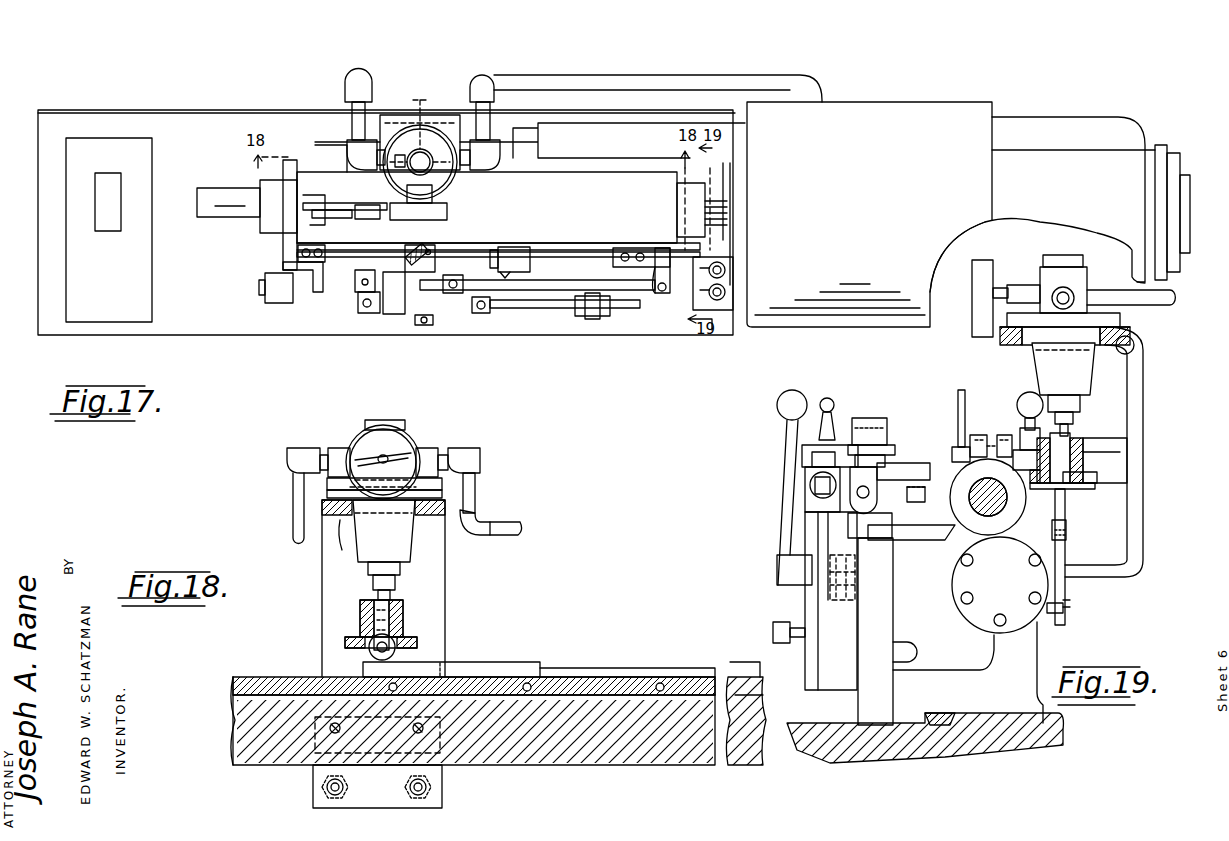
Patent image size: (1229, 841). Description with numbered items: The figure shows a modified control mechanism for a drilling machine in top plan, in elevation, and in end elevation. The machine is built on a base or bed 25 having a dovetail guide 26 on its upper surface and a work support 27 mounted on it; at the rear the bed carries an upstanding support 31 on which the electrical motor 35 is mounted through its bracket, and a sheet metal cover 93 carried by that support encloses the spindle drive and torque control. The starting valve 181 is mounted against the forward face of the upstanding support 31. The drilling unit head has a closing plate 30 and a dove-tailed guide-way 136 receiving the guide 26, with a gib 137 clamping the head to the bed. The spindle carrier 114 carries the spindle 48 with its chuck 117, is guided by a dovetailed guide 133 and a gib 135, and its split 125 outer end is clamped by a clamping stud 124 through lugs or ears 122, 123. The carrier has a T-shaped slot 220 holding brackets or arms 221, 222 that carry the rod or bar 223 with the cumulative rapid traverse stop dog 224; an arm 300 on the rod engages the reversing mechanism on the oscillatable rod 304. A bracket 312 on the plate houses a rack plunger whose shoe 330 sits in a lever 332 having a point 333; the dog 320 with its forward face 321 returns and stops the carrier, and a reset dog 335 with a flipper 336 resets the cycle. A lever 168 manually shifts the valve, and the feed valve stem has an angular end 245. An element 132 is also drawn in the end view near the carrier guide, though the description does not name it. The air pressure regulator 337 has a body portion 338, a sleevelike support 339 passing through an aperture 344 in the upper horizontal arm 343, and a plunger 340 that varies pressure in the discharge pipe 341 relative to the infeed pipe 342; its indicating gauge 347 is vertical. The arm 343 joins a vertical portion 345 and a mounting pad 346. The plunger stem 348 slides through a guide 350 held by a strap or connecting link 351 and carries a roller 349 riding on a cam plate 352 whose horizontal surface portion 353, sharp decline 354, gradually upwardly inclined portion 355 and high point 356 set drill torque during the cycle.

In FIG. 17, the base or bed 25 is at (218, 322).
In FIG. 19, the base or bed 25 is at (968, 745).
In FIG. 19, the dovetail guide 26 is at (1008, 718).
In FIG. 17, the work support 27 is at (96, 312).
In FIG. 19, the closing plate 30 is at (880, 693).
In FIG. 17, the upstanding support 31 is at (740, 234).
In FIG. 17, the electrical motor 35 is at (1078, 130).
In FIG. 17, the spindle 48 is at (720, 200).
In FIG. 17, the sheet metal cover 93 is at (965, 115).
In FIG. 17, the spindle carrier 114 is at (625, 193).
In FIG. 17, the chuck 117 is at (238, 180).
In FIG. 17, the lug or ear 122 is at (327, 202).
In FIG. 17, the lug or ear 123 is at (328, 218).
In FIG. 17, the clamping stud 124 is at (283, 220).
In FIG. 17, the split 125 is at (372, 215).
In FIG. 19, the disc 132 is at (1015, 625).
In FIG. 19, the dovetailed guide 133 is at (1012, 535).
In FIG. 19, the gib 135 is at (928, 540).
In FIG. 19, the dove-tailed guide-way 136 is at (1046, 718).
In FIG. 19, the gib 137 is at (940, 742).
In FIG. 17, the lever 168 is at (425, 328).
In FIG. 19, the lever 168 is at (787, 470).
In FIG. 17, the starting valve 181 is at (745, 308).
In FIG. 17, the T-shaped slot 220 is at (590, 250).
In FIG. 19, the T-shaped slot 220 is at (868, 480).
In FIG. 17, the bracket or arm 221 is at (655, 252).
In FIG. 19, the bracket or arm 221 is at (920, 478).
In FIG. 17, the bracket or arm 222 is at (303, 286).
In FIG. 17, the rod or bar 223 is at (640, 298).
In FIG. 17, the cumulative rapid traverse stop dog 224 is at (455, 295).
In FIG. 19, the end of angular cross-section 245 is at (782, 642).
In FIG. 17, the arm 300 is at (280, 305).
In FIG. 19, the oscillatable rod 304 is at (818, 490).
In FIG. 19, the bracket 312 is at (820, 549).
In FIG. 17, the dog 320 is at (525, 247).
In FIG. 17, the forward face 321 is at (500, 250).
In FIG. 19, the shoe 330 is at (866, 432).
In FIG. 17, the lever 332 is at (390, 312).
In FIG. 19, the lever 332 is at (842, 430).
In FIG. 19, the point 333 is at (868, 445).
In FIG. 17, the reset dog 335 is at (400, 243).
In FIG. 17, the flipper 336 is at (450, 250).
In FIG. 17, the air pressure regulator 337 is at (459, 73).
In FIG. 18, the air pressure regulator 337 is at (476, 392).
In FIG. 19, the air pressure regulator 337 is at (1054, 243).
In FIG. 18, the body portion 338 is at (478, 486).
In FIG. 19, the body portion 338 is at (1118, 320).
In FIG. 18, the sleevelike support 339 is at (402, 546).
In FIG. 19, the sleevelike support 339 is at (1040, 375).
In FIG. 18, the plunger 340 is at (398, 580).
In FIG. 19, the plunger 340 is at (1065, 402).
In FIG. 17, the discharge pipe 341 is at (658, 84).
In FIG. 18, the discharge pipe 341 is at (508, 520).
In FIG. 19, the discharge pipe 341 is at (1172, 298).
In FIG. 17, the infeed pipe 342 is at (352, 86).
In FIG. 18, the infeed pipe 342 is at (295, 527).
In FIG. 18, the upper horizontal arm 343 is at (323, 540).
In FIG. 19, the upper horizontal arm 343 is at (1137, 343).
In FIG. 18, the aperture 344 is at (342, 548).
In FIG. 19, the aperture 344 is at (1018, 340).
In FIG. 18, the vertical portion 345 is at (437, 613).
In FIG. 19, the vertical portion 345 is at (1145, 416).
In FIG. 19, the mounting pad 346 is at (1068, 590).
In FIG. 17, the indicating gauge 347 is at (440, 180).
In FIG. 18, the indicating gauge 347 is at (400, 445).
In FIG. 19, the indicating gauge 347 is at (980, 322).
In FIG. 18, the stem 348 is at (403, 613).
In FIG. 19, the stem 348 is at (1068, 488).
In FIG. 18, the roller 349 is at (392, 655).
In FIG. 19, the roller 349 is at (1067, 503).
In FIG. 18, the guide 350 is at (360, 613).
In FIG. 19, the guide 350 is at (1080, 472).
In FIG. 19, the strap or connecting link 351 is at (1107, 445).
In FIG. 18, the cam plate 352 is at (362, 672).
In FIG. 19, the cam plate 352 is at (1067, 523).
In FIG. 18, the horizontal surface portion 353 is at (533, 640).
In FIG. 18, the sharp decline 354 is at (540, 668).
In FIG. 18, the gradually upwardly inclined portion 355 is at (690, 668).
In FIG. 18, the high point 356 is at (745, 660).
In FIG. 19, the high point 356 is at (749, 623).